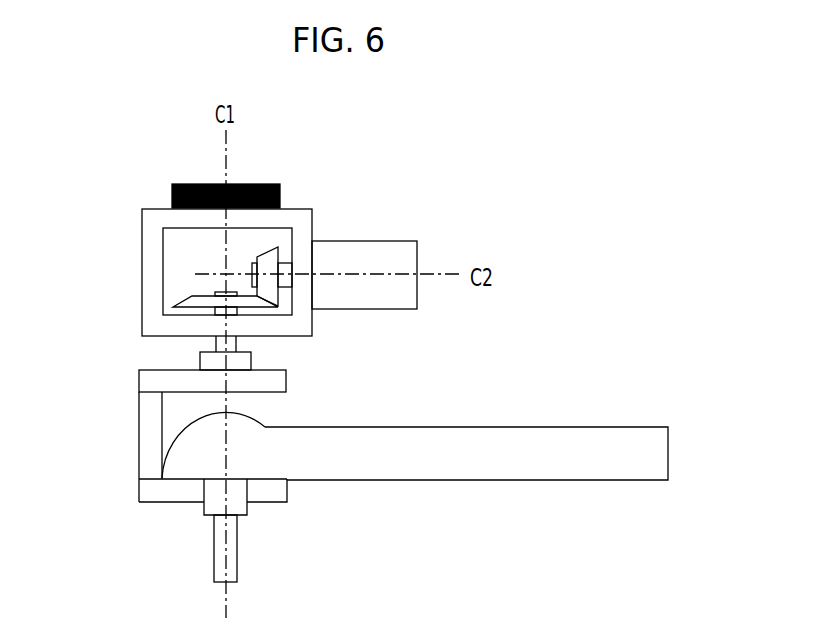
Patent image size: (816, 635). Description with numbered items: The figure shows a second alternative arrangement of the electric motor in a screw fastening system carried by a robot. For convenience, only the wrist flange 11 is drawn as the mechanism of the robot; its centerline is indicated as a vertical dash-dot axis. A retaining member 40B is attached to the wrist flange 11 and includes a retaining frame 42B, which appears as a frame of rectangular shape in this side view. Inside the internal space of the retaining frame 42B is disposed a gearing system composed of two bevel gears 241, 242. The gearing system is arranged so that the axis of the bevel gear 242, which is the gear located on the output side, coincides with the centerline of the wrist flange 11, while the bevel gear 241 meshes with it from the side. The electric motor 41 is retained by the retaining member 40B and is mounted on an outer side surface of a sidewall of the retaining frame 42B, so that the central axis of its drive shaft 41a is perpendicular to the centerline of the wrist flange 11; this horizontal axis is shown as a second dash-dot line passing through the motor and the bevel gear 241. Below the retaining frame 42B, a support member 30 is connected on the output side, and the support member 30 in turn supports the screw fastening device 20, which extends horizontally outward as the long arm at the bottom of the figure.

The wrist flange 11 is at (172, 194).
The screw fastening device 20 is at (620, 427).
The support member 30 is at (133, 420).
The retaining member 40B is at (452, 138).
The electric motor 41 is at (402, 241).
The drive shaft 41a is at (285, 260).
The retaining frame 42B is at (312, 327).
The bevel gear 241 is at (272, 249).
The bevel gear 242 is at (183, 306).